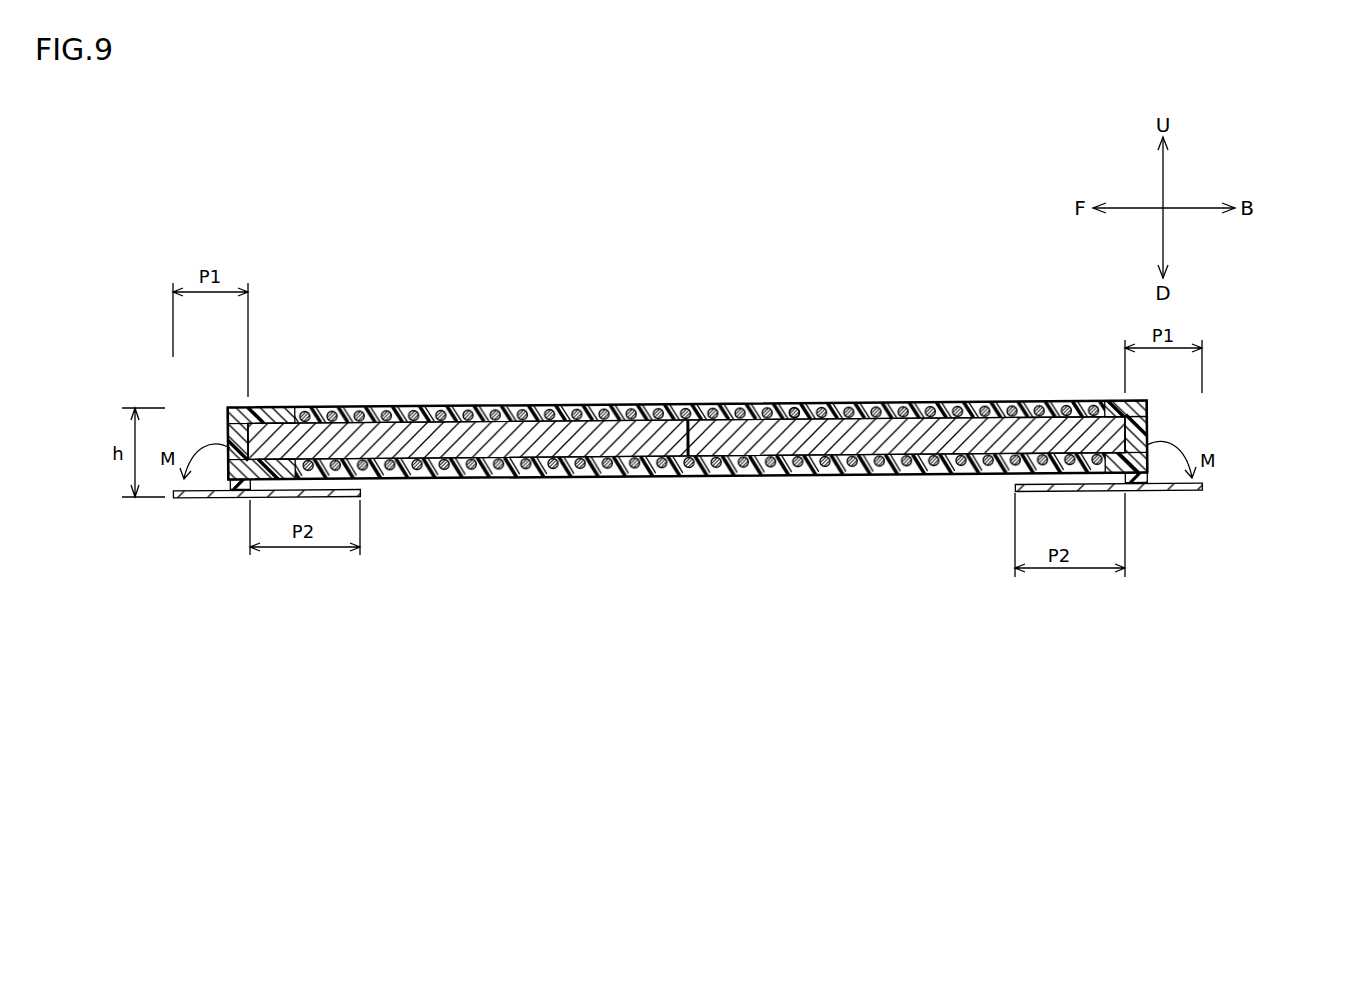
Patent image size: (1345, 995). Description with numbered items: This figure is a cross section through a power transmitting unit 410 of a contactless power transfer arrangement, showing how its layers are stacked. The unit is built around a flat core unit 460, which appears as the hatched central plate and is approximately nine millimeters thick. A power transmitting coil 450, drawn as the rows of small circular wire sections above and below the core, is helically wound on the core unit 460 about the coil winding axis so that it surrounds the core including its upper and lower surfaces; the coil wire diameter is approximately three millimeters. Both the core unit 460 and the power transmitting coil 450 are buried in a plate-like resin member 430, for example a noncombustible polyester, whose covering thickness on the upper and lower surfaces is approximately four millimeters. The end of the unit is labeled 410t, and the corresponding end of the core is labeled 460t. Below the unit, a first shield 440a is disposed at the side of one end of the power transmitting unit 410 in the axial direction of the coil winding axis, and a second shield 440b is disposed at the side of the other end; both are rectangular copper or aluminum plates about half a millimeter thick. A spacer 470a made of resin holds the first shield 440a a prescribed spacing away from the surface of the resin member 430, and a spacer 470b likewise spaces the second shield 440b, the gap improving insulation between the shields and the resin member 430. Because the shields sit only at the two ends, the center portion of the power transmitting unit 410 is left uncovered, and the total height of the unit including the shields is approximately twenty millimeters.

The power transmitting unit 410 is at (1014, 366).
The resin member 430 is at (890, 410).
The power transmitting coil 450 is at (793, 410).
The core unit 460 is at (832, 440).
The first shield 440a is at (222, 492).
The second shield 440b is at (1178, 488).
The spacer 470a is at (243, 484).
The spacer 470b is at (1138, 492).
The end portion of panel member 410t is at (230, 415).
The end portion of core member 460t is at (247, 442).